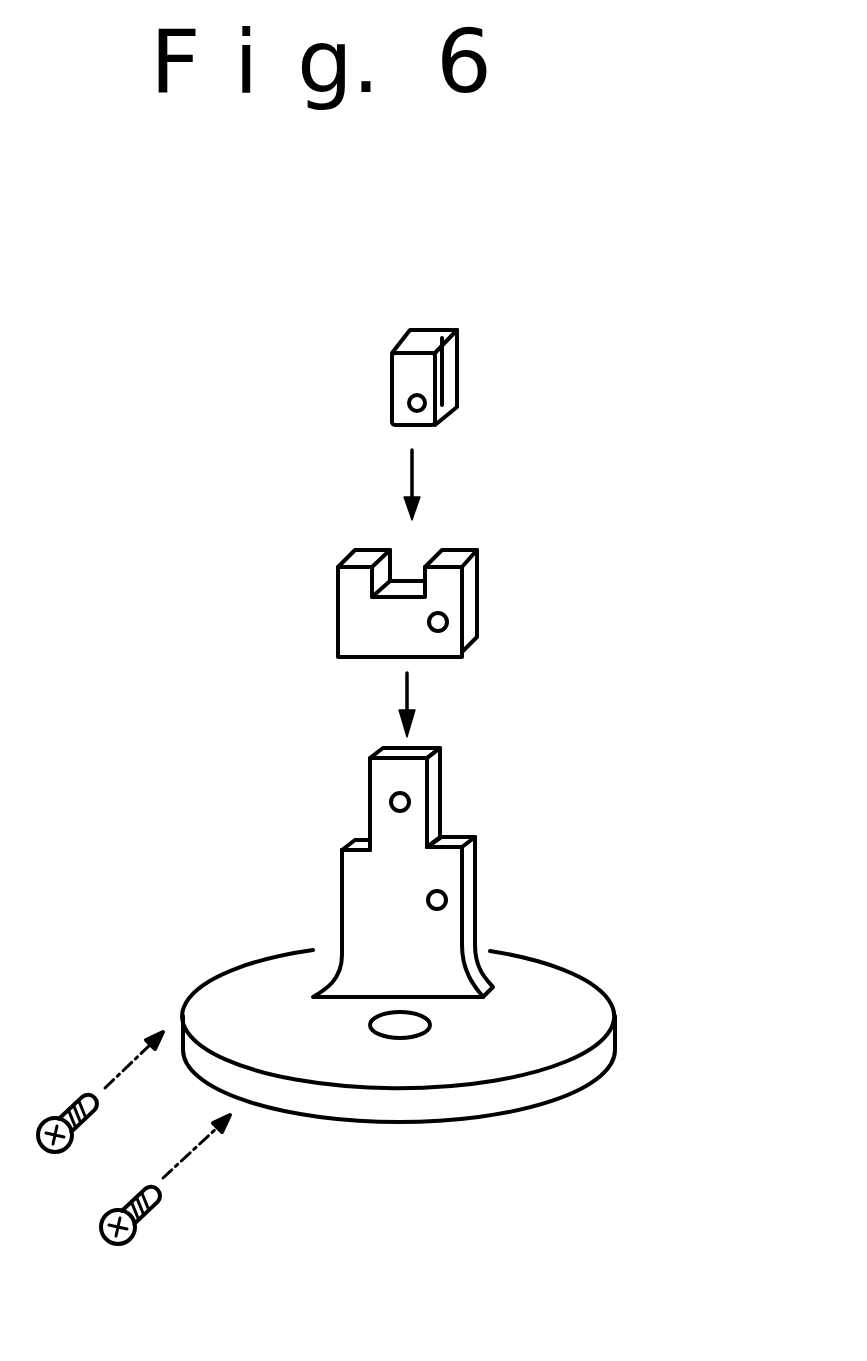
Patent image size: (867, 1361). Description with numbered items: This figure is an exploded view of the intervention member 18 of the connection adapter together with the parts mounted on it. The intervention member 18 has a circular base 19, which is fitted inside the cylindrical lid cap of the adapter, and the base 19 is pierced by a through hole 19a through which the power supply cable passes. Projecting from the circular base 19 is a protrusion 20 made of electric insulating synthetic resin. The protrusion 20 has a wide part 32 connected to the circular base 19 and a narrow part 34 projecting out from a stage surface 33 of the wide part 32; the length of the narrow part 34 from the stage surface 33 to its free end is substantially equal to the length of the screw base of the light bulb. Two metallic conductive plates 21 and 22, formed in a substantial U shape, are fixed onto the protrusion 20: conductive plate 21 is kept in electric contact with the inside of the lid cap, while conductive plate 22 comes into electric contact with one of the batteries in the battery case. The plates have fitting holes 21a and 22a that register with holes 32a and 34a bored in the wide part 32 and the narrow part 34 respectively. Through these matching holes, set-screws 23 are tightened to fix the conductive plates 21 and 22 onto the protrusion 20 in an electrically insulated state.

The intervention member 18 is at (417, 845).
The circular base 19 is at (461, 1079).
The through hole 19a is at (403, 1028).
The protrusion 20 is at (333, 875).
The conductive plate 21 is at (446, 588).
The fitting hole 21a is at (447, 620).
The conductive plate 22 is at (440, 359).
The fitting hole 22a is at (425, 405).
The set-screws 23 is at (100, 1107).
The wide part 32 is at (417, 917).
The hole 32a is at (446, 898).
The stage surface 33 is at (450, 838).
The narrow part 34 is at (424, 772).
The hole 34a is at (409, 800).